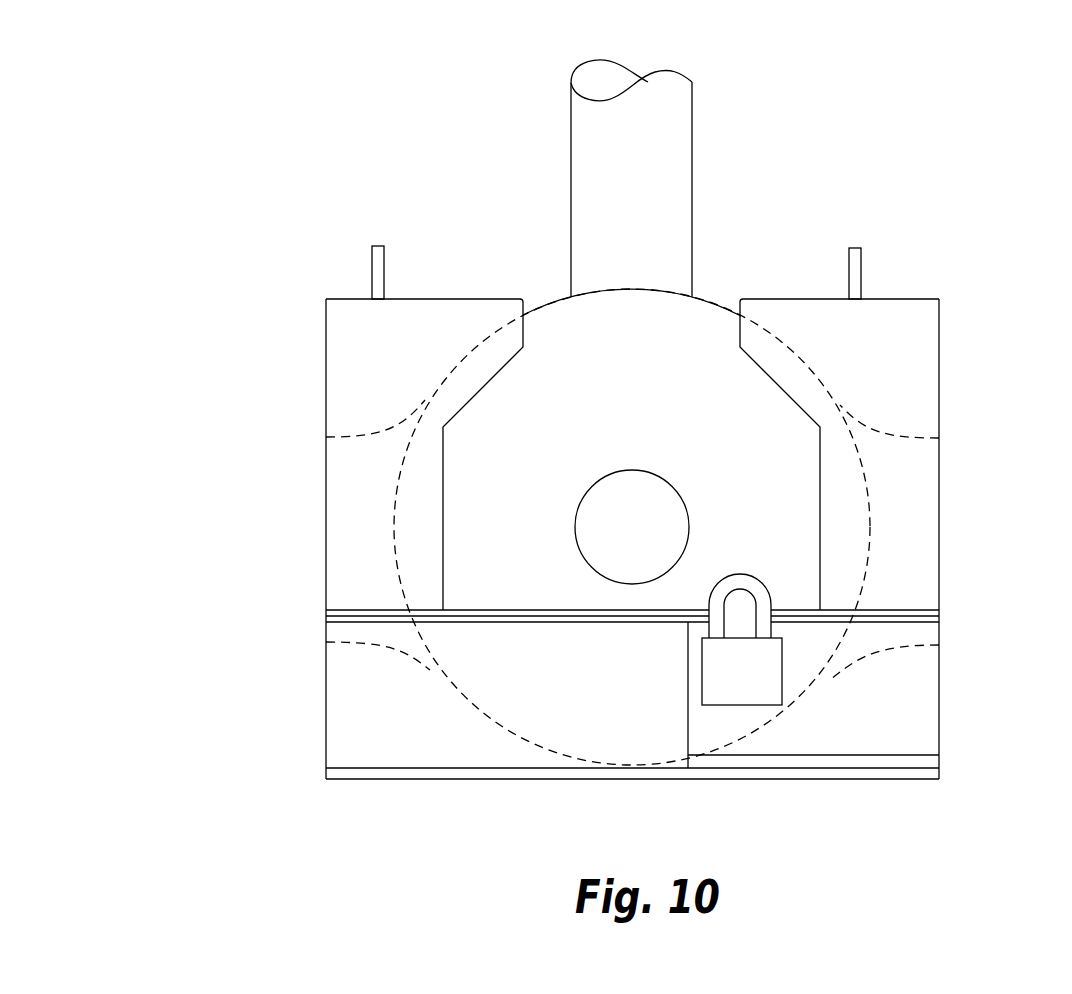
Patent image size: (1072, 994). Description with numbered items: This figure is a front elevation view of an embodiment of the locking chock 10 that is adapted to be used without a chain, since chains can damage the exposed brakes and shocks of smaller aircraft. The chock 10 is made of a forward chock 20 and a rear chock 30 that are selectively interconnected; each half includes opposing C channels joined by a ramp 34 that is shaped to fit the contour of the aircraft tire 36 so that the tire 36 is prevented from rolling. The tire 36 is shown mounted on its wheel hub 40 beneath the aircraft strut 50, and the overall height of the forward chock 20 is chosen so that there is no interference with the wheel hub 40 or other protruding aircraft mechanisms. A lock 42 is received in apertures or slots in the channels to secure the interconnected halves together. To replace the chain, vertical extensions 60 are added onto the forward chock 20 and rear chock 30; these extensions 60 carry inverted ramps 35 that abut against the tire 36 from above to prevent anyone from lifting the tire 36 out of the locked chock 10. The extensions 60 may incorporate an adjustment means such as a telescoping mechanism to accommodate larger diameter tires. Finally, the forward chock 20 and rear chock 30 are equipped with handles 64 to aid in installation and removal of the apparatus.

The locking chock 10 is at (604, 470).
The forward chock 20 is at (939, 737).
The rear chock 30 is at (323, 760).
The ramp 34 is at (460, 723).
The inverted ramp 35 is at (357, 373).
The aircraft tire 36 is at (702, 318).
The wheel hub 40 is at (631, 528).
The lock 42 is at (722, 693).
The aircraft strut 50 is at (693, 165).
The vertical extension 60 is at (327, 535).
The handle 64 is at (372, 273).